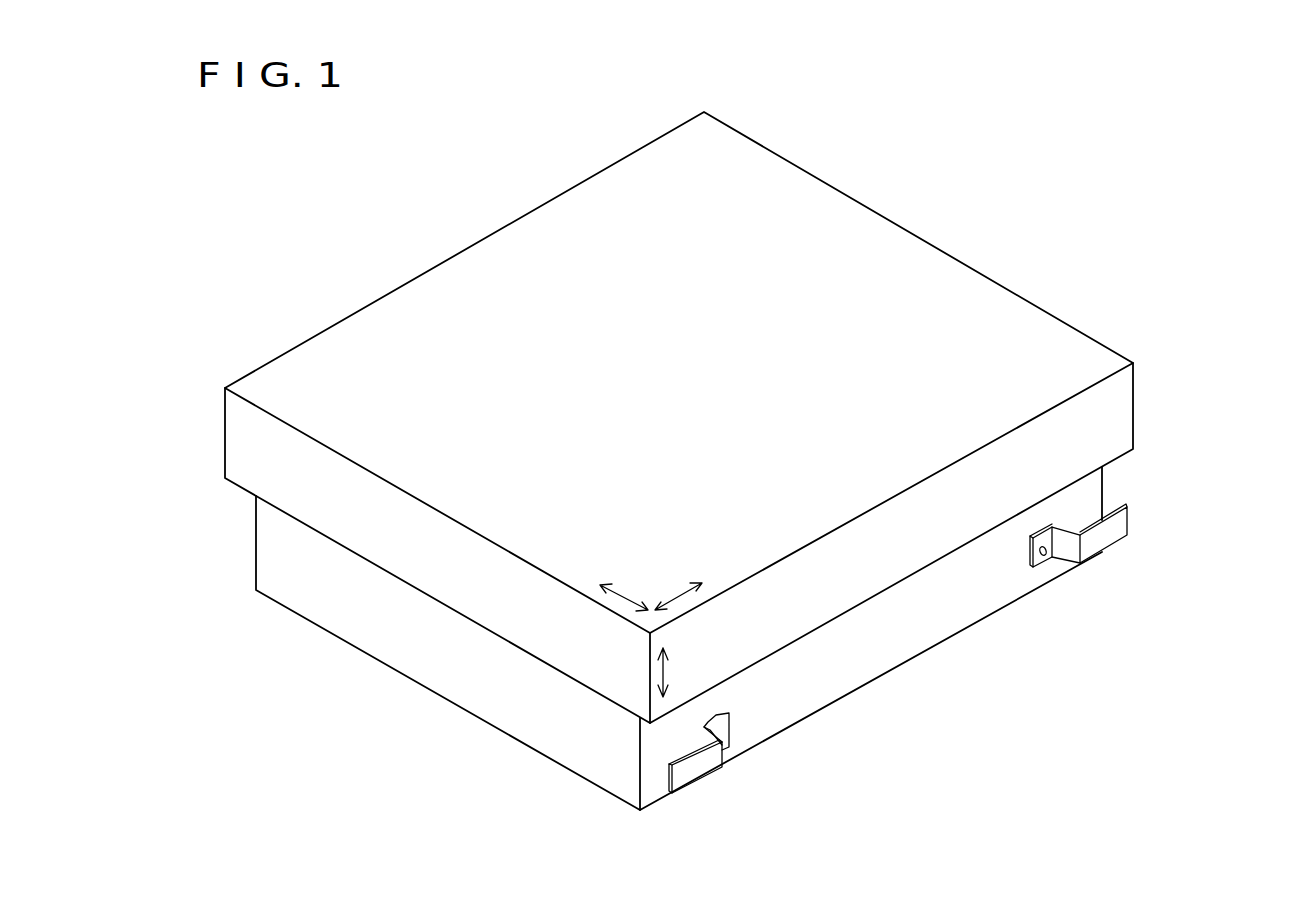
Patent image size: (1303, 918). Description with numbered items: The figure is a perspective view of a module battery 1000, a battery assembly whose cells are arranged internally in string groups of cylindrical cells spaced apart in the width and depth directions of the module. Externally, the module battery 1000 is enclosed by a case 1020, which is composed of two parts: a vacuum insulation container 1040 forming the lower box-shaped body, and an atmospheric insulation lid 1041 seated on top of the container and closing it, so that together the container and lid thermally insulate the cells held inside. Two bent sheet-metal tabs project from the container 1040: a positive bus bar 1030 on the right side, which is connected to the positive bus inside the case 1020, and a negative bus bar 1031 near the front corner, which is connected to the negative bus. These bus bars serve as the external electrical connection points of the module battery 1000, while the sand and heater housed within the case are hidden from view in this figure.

The module battery 1000 is at (890, 188).
The case 1020 is at (1213, 392).
The atmospheric insulation lid 1041 is at (1134, 410).
The vacuum insulation container 1040 is at (1104, 473).
The positive bus bar 1030 is at (1106, 565).
The negative bus bar 1031 is at (705, 790).